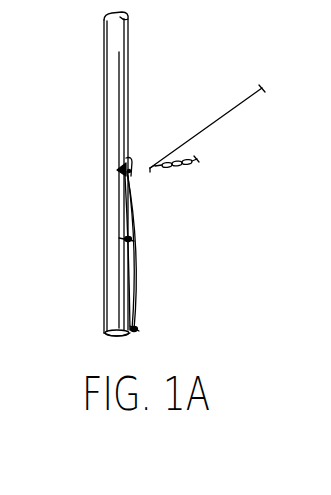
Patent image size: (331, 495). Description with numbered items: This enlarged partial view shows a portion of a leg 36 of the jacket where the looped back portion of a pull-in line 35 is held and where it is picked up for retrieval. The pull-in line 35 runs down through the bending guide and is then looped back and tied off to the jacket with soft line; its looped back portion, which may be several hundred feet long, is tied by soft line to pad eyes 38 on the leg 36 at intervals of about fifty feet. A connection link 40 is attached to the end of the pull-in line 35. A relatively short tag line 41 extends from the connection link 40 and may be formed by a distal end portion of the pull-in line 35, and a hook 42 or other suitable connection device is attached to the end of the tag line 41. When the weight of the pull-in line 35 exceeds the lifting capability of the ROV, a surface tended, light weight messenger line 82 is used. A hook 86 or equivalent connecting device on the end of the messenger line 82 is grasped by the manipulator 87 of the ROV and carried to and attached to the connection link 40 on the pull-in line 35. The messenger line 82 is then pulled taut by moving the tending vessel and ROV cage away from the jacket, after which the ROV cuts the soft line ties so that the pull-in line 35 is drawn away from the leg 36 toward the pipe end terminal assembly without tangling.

The leg 36 is at (115, 78).
The connection link 40 is at (118, 165).
The tag line 41 is at (135, 296).
The pull-in line 35 is at (122, 297).
The pad eyes 38 is at (126, 240).
The hook 42 is at (139, 329).
The messenger line 82 is at (211, 123).
The hook 86 is at (150, 170).
The manipulator 87 is at (196, 162).